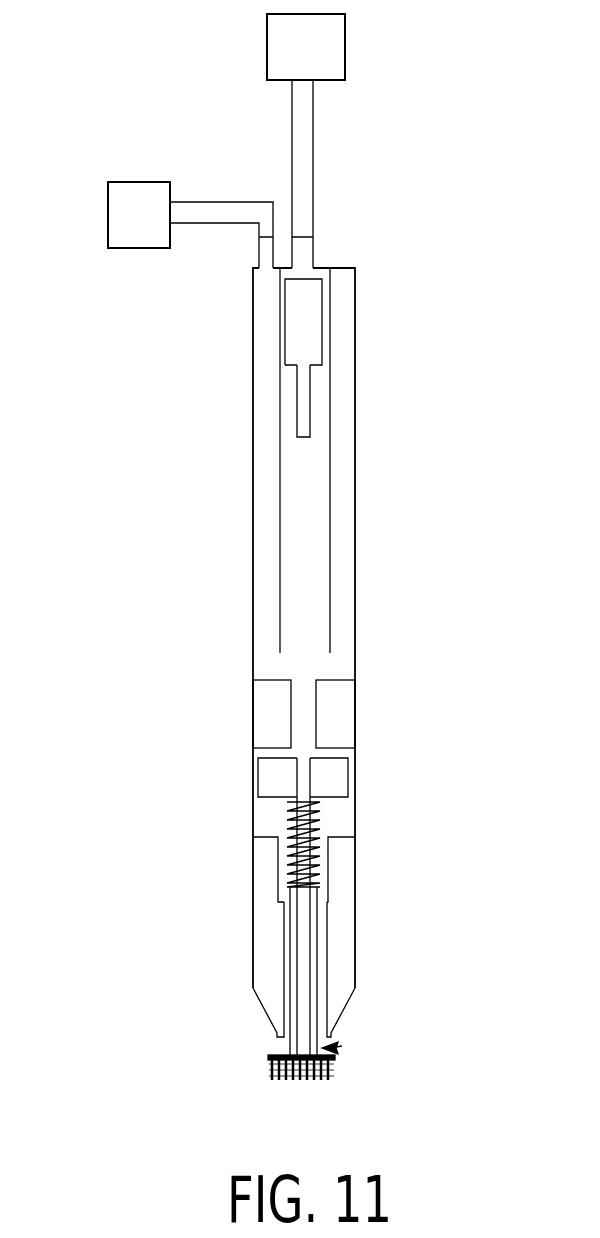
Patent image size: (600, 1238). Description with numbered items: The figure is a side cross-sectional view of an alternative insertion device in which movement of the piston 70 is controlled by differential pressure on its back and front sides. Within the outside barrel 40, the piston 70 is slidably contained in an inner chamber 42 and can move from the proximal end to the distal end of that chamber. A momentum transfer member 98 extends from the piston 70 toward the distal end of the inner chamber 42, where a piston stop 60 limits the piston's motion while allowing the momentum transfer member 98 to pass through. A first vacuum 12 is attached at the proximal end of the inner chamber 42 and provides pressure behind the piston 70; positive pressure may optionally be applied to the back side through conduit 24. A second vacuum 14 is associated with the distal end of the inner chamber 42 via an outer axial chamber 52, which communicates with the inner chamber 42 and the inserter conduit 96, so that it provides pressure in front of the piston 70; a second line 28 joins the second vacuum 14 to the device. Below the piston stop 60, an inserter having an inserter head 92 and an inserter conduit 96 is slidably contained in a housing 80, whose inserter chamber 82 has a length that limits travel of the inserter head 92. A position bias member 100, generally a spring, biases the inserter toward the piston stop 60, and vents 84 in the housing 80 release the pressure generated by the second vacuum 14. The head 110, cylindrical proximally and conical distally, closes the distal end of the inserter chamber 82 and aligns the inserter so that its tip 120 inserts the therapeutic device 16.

The first vacuum 12 is at (337, 50).
The second vacuum 14 is at (126, 213).
The conduit 24 is at (307, 257).
The second fluid conduit 28 is at (267, 262).
The outside barrel 40 is at (255, 348).
The inner chamber 42 is at (330, 488).
The outer axial chamber 52 is at (263, 417).
The piston 70 is at (315, 328).
The momentum transfer member 98 is at (305, 405).
The piston stop 60 is at (343, 733).
The vent 84 is at (253, 782).
The inserter head 92 is at (338, 770).
The housing 80 is at (253, 827).
The inserter chamber 82 is at (343, 827).
The position bias member 100 is at (278, 858).
The inserter conduit 96 is at (303, 902).
The head 110 is at (277, 958).
The therapeutic device 16 is at (267, 1057).
The tip 120 is at (340, 1046).